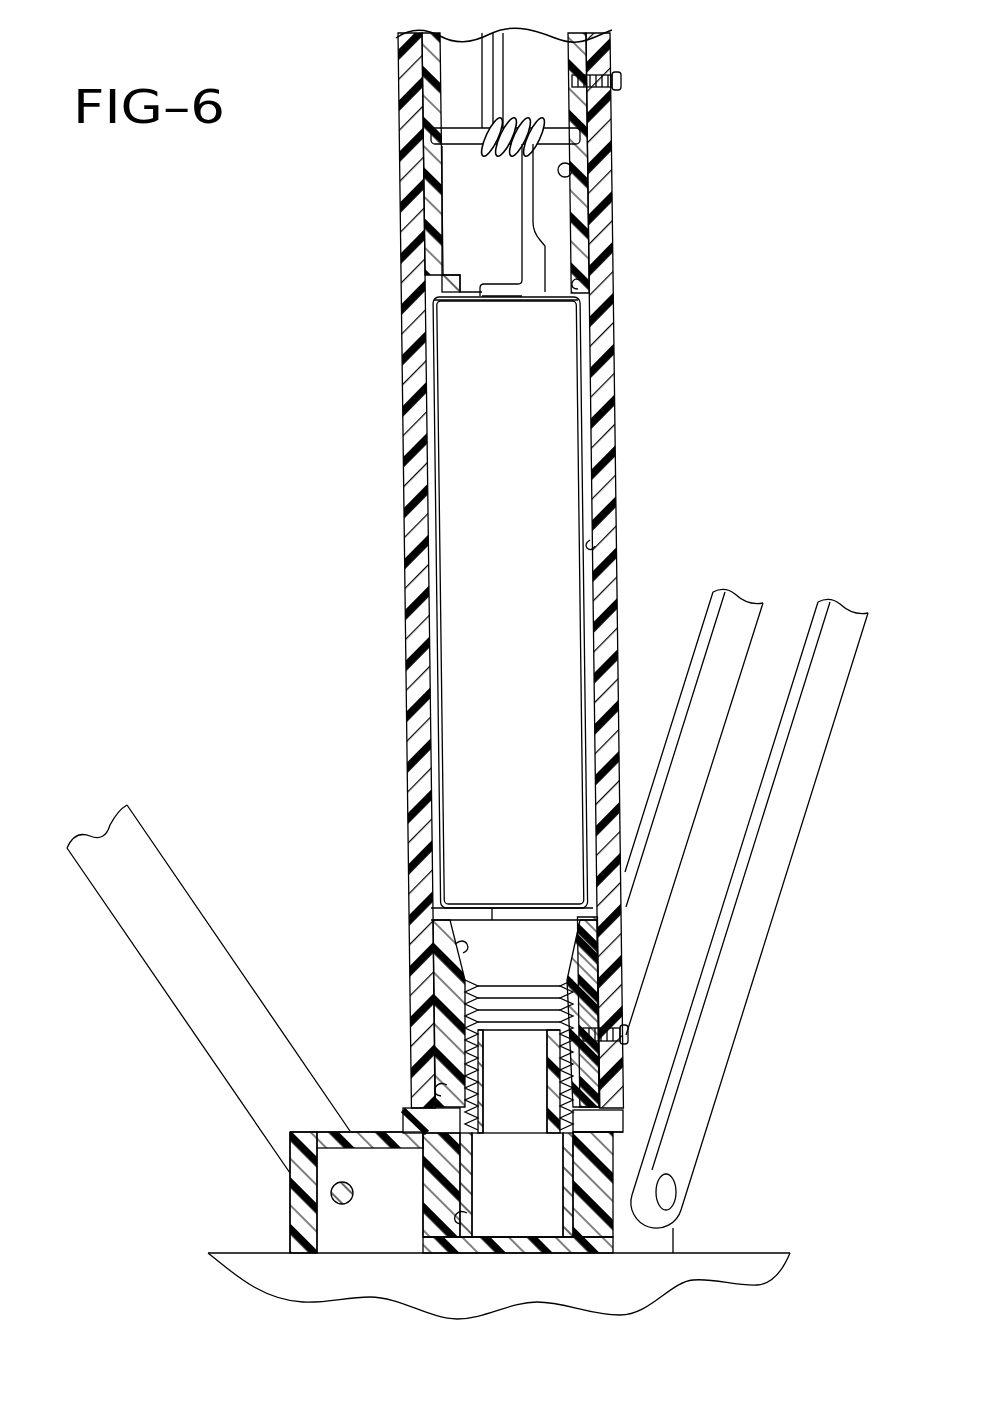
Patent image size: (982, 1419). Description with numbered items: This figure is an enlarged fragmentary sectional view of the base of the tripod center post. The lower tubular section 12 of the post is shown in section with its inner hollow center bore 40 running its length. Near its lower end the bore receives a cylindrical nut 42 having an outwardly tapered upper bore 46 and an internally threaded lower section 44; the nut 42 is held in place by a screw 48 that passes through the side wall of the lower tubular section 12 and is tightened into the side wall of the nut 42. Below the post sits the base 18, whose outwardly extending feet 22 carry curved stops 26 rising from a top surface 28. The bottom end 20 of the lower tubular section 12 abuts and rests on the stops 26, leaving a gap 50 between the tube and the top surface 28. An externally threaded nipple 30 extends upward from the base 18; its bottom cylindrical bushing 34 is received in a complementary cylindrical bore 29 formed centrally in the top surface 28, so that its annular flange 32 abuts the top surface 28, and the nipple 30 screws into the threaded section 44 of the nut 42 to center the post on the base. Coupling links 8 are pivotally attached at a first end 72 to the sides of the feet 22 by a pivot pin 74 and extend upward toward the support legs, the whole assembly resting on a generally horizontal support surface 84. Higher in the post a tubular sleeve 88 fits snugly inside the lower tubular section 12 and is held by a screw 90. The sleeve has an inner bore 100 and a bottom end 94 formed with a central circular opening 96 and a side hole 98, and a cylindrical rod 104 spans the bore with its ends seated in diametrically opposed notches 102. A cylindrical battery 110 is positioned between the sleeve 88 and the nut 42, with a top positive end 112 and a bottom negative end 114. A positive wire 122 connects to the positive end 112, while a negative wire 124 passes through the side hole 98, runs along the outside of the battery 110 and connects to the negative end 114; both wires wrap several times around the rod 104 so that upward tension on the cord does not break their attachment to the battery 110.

The coupling link 8 is at (186, 1020).
The lower tubular section 12 is at (612, 342).
The base 18 is at (282, 1164).
The bottom end 20 is at (617, 1124).
The feet 22 is at (305, 1226).
The curved stops 26 is at (398, 1122).
The top surface 28 is at (345, 1128).
The cylindrical bore 29 is at (467, 1213).
The externally threaded nipple 30 is at (585, 1088).
The annular flange 32 is at (462, 1125).
The bottom cylindrical bushing 34 is at (567, 1207).
The inner hollow center bore 40 is at (590, 540).
The cylindrical nut 42 is at (440, 976).
The internally threaded lower section 44 is at (500, 1012).
The outwardly tapered upper bore 46 is at (455, 944).
The screw 48 is at (630, 1035).
The gap 50 is at (447, 1085).
The first end 72 is at (667, 1222).
The pivot pin 74 is at (331, 1193).
The support surface 84 is at (770, 1253).
The tubular sleeve 88 is at (440, 80).
The screw 90 is at (622, 78).
The bottom end 94 is at (455, 288).
The central circular opening 96 is at (556, 246).
The side hole 98 is at (548, 288).
The inner bore 100 is at (575, 172).
The notches 102 is at (430, 137).
The cylindrical rod 104 is at (467, 142).
The battery 110 is at (460, 577).
The top positive end 112 is at (452, 312).
The bottom negative end 114 is at (490, 912).
The positive wire 122 is at (496, 288).
The negative wire 124 is at (595, 488).